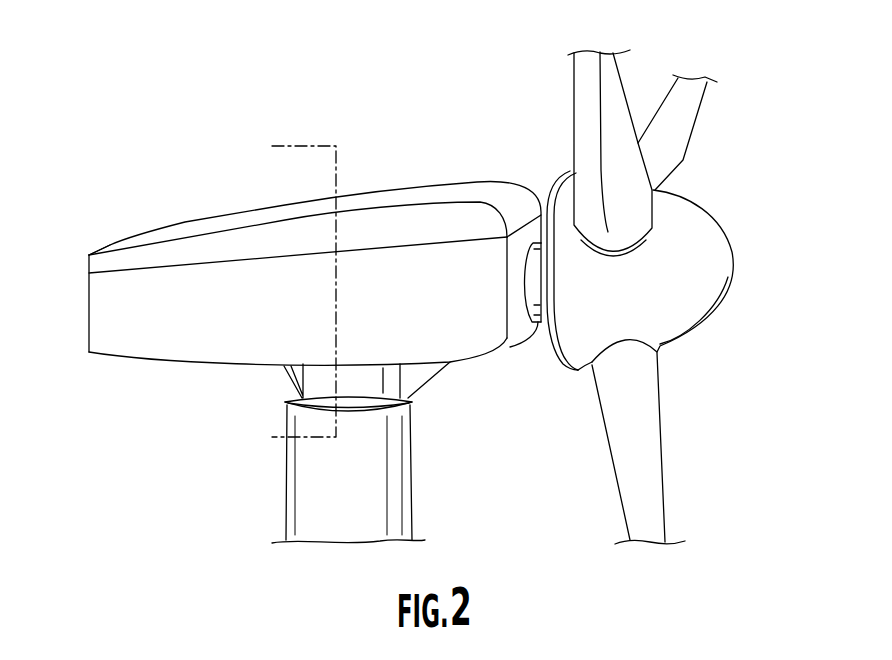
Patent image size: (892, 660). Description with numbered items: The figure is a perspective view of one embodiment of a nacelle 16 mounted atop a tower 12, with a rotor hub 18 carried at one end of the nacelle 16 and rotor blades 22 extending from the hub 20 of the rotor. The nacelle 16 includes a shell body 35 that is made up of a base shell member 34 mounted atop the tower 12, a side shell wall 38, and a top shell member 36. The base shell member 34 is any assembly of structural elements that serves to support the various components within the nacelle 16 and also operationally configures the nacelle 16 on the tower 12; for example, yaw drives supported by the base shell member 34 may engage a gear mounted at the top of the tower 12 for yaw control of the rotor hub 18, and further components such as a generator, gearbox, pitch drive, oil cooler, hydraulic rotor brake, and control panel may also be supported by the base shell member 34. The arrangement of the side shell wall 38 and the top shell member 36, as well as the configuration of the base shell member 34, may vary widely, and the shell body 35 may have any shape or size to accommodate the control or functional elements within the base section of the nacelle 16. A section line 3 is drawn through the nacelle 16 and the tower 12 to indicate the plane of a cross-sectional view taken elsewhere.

The section line for FIG. 3 is at (289, 293).
The tower 12 is at (288, 500).
The nacelle 16 is at (282, 266).
The rotor hub 18 is at (699, 297).
The rotor hub 20 is at (695, 343).
The rotor blade 22 is at (678, 135).
The base shell member 34 is at (170, 364).
The shell body 35 is at (86, 243).
The top shell member 36 is at (430, 201).
The side shell wall 38 is at (128, 290).